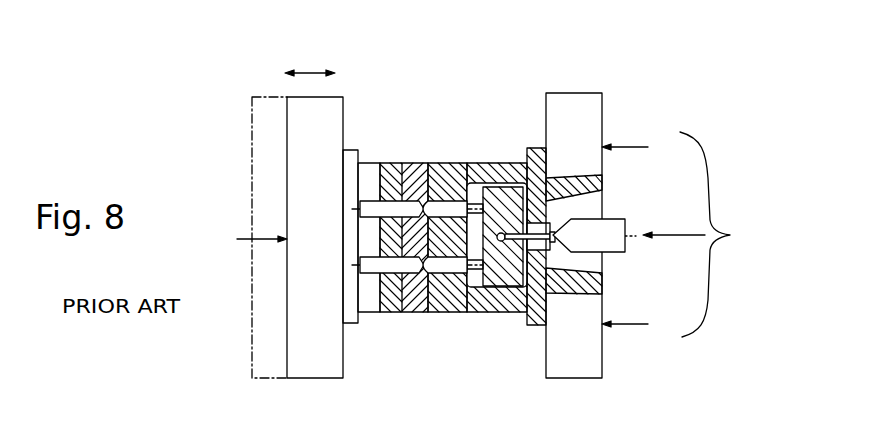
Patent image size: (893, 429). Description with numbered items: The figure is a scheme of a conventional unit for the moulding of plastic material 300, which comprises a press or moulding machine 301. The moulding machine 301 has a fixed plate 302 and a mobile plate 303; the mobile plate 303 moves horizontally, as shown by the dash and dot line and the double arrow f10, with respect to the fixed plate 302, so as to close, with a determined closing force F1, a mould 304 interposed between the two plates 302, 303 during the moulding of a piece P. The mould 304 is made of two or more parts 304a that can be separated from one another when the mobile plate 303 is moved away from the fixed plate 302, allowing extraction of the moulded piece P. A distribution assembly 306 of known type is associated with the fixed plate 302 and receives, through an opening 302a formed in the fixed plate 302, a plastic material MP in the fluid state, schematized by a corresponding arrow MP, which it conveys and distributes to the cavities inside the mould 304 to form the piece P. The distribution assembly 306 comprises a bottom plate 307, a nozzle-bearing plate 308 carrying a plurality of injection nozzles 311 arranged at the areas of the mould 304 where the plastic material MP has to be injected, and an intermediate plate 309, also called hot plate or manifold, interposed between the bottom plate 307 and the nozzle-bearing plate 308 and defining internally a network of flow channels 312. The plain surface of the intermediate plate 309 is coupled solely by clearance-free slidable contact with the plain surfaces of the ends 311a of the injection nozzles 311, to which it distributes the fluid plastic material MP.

The unit for the moulding of plastic material 300 is at (590, 55).
The moulding machine 301 is at (418, 81).
The fixed plate 302 is at (595, 112).
The opening 302a is at (600, 197).
The mobile plate 303 is at (296, 110).
The mould 304 is at (391, 338).
The mould parts 304a is at (392, 168).
The distribution assembly 306 is at (486, 332).
The bottom plate 307 is at (528, 148).
The nozzle-bearing plate 308 is at (460, 163).
The intermediate plate 309 is at (509, 284).
The injection nozzles 311 is at (441, 176).
The ends of the injection nozzles 311a is at (478, 197).
The flow channels 312 is at (521, 257).
The piece P is at (415, 178).
The plastic material MP is at (680, 235).
The closing force F1 is at (735, 235).
The double arrow f10 is at (310, 73).